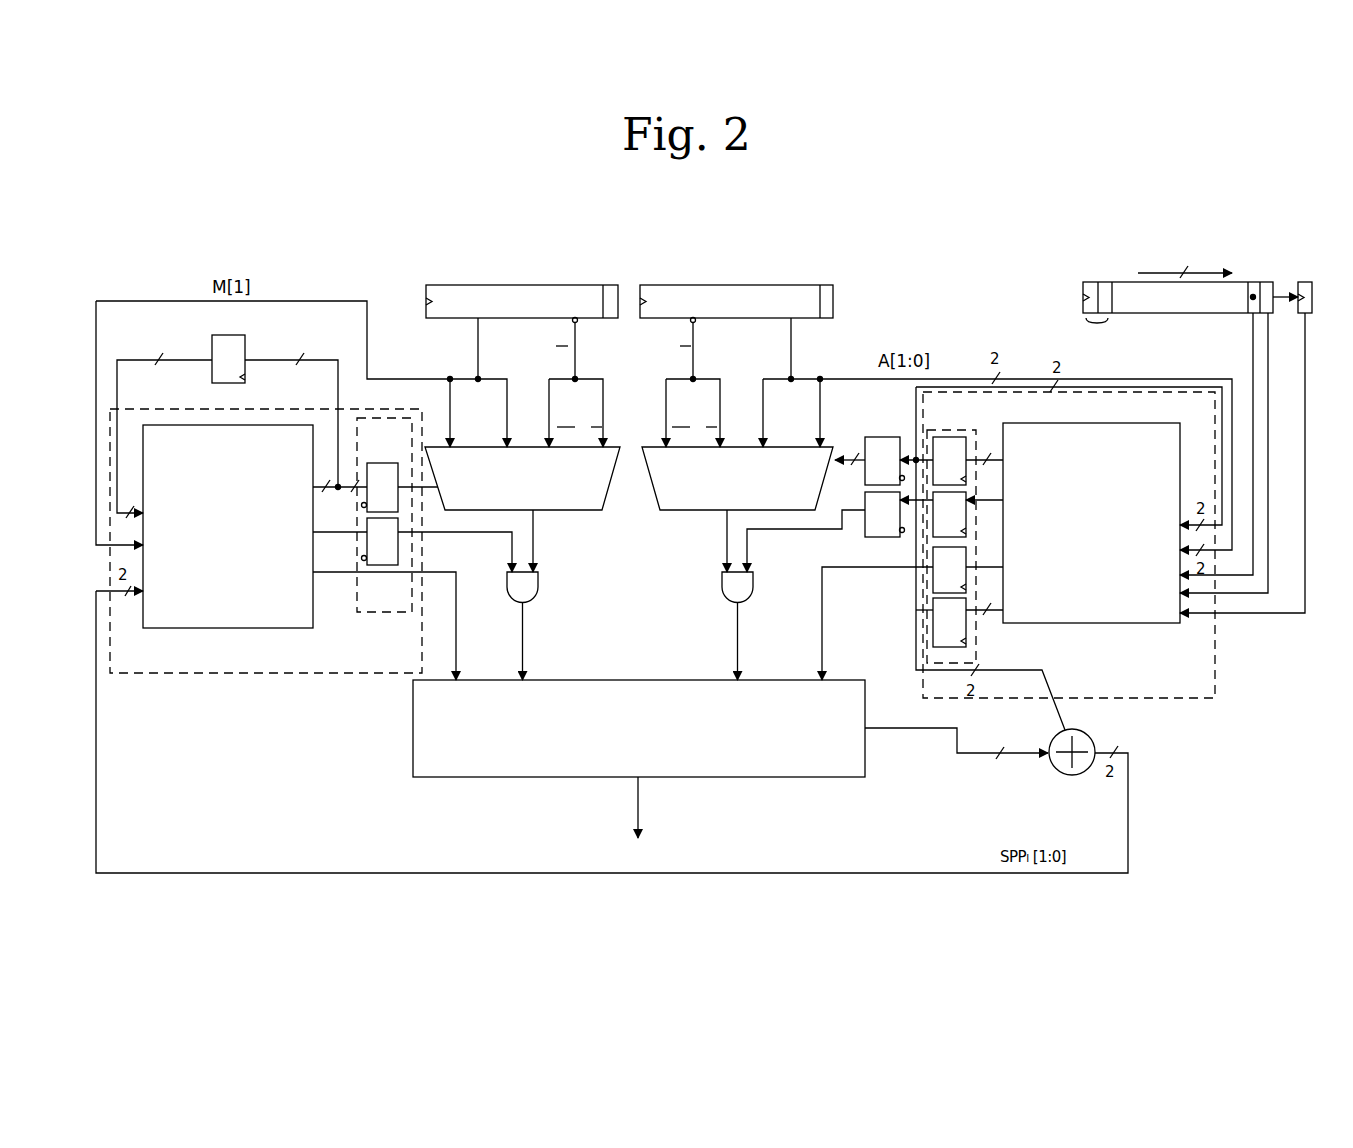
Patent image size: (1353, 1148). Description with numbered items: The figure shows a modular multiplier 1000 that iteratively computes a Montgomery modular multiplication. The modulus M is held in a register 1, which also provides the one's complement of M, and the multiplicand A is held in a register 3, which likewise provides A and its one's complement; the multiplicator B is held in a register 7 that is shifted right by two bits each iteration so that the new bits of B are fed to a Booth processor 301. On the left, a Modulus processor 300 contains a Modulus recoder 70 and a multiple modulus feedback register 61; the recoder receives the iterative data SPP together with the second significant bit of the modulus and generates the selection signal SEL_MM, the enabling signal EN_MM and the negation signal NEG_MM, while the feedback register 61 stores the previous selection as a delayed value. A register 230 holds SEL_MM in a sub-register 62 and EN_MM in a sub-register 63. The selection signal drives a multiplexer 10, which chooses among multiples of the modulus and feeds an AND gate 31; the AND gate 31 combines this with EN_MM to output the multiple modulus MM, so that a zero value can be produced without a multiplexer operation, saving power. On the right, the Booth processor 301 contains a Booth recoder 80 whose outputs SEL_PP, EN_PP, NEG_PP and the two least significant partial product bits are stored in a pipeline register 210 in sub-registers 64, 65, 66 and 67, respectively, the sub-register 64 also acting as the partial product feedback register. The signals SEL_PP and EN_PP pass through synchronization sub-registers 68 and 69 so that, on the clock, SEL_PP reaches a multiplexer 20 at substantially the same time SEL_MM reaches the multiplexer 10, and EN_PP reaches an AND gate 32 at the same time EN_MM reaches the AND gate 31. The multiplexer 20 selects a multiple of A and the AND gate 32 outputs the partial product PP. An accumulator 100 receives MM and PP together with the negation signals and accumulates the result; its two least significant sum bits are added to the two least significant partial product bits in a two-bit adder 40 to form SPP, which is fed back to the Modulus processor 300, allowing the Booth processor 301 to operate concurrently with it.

The register 1 is at (450, 285).
The register 3 is at (666, 285).
The register 7 is at (1123, 282).
The multiplexer 10 is at (578, 511).
The multiplexer 20 is at (683, 511).
The AND gate 31 is at (538, 580).
The AND gate 32 is at (753, 580).
The 2-bit adder 40 is at (1072, 776).
The multiple modulus feedback register 61 is at (248, 341).
The sub-register 62 is at (386, 463).
The sub-register 63 is at (384, 568).
The partial product feedback register 64 is at (950, 437).
The sub-register 65 is at (927, 537).
The sub-register 66 is at (930, 580).
The sub-register 67 is at (968, 645).
The sub-register 68 is at (883, 437).
The sub-register 69 is at (865, 537).
The Modulus recoder 70 is at (228, 629).
The Booth recoder 80 is at (1163, 624).
The accumulator 100 is at (413, 731).
The pipeline register 210 is at (927, 628).
The register 230 is at (385, 613).
The Modulus processor 300 is at (160, 676).
The Booth processor 301 is at (1180, 699).
The modular multiplier 1000 is at (1005, 250).